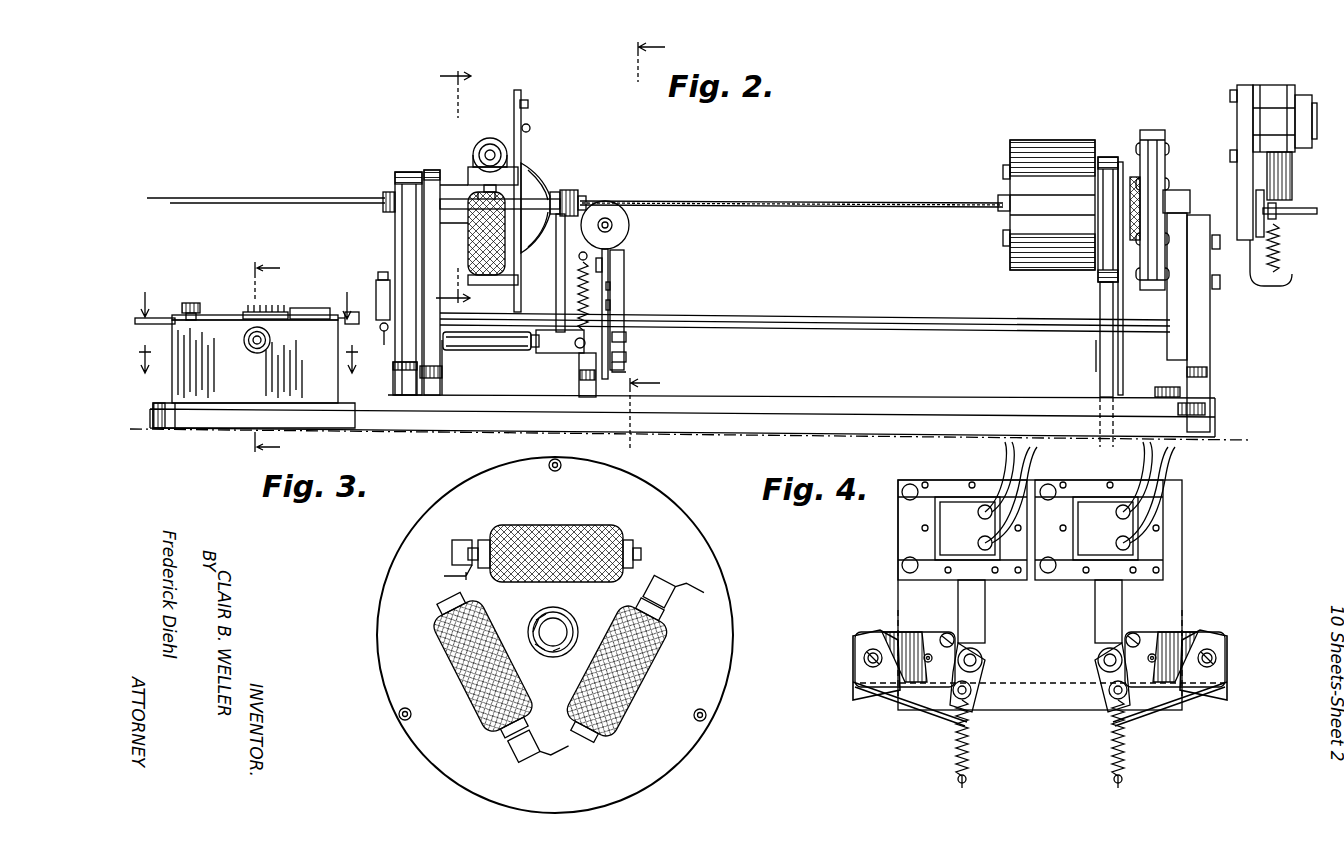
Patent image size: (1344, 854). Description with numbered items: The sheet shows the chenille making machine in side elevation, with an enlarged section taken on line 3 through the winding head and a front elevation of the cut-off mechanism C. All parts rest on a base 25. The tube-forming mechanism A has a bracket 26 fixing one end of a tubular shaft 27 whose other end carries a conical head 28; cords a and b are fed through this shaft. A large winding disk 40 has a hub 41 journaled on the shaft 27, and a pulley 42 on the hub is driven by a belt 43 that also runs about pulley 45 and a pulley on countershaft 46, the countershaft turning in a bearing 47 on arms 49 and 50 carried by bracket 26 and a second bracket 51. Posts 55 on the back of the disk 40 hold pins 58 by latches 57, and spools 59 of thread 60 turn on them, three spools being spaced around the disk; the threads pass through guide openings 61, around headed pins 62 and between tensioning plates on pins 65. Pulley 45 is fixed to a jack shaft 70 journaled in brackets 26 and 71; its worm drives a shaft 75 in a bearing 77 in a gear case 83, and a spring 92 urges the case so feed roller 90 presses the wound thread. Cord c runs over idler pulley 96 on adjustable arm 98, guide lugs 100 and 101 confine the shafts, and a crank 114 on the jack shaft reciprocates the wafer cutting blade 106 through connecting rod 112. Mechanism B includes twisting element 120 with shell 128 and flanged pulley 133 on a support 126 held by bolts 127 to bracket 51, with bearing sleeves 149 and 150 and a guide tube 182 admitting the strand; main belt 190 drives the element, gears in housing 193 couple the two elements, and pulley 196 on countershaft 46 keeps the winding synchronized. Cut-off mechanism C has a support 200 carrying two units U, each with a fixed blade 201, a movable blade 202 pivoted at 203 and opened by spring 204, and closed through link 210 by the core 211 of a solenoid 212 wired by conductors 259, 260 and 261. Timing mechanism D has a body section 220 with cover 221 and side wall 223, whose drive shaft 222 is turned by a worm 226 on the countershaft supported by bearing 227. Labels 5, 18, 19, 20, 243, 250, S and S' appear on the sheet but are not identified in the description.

In FIG. 2, the section line 3— 3 is at (452, 188).
In FIG. 2, the section line 5- 5 is at (655, 242).
In FIG. 2, the section line 18- 18 is at (247, 293).
In FIG. 2, the section line 19- 19 is at (249, 370).
In FIG. 2, the section line 20- 20 is at (280, 358).
In FIG. 2, the base 25 is at (706, 425).
In FIG. 2, the bracket 26 is at (407, 372).
In FIG. 2, the tubular shaft 27 is at (385, 197).
In FIG. 3, the tubular shaft 27 is at (575, 618).
In FIG. 2, the conical head 28 is at (535, 190).
In FIG. 2, the disk 40 is at (522, 92).
In FIG. 3, the disk 40 is at (377, 620).
In FIG. 2, the hub 41 is at (455, 192).
In FIG. 3, the hub 41 is at (541, 610).
In FIG. 2, the pulley 42 is at (432, 170).
In FIG. 2, the belt 43 is at (412, 172).
In FIG. 2, the pulley 45 is at (440, 380).
In FIG. 2, the countershaft 46 is at (870, 318).
In FIG. 2, the bearing 47 is at (378, 272).
In FIG. 2, the arm 49 is at (384, 345).
In FIG. 2, the arm 50 is at (1210, 368).
In FIG. 2, the bracket 51 is at (1210, 344).
In FIG. 3, the post 55 is at (452, 548).
In FIG. 3, the latch 57 is at (444, 576).
In FIG. 2, the pin 58 is at (492, 150).
In FIG. 3, the pin 58 is at (638, 548).
In FIG. 2, the spool 59 is at (476, 145).
In FIG. 3, the spool 59 is at (600, 525).
In FIG. 2, the thread 60 is at (530, 104).
In FIG. 3, the thread 60 is at (545, 525).
In FIG. 3, the guide opening 61 is at (398, 718).
In FIG. 2, the headed pin 62 is at (531, 127).
In FIG. 2, the pin 65 is at (555, 190).
In FIG. 2, the jack shaft 70 is at (522, 352).
In FIG. 2, the bracket 71 is at (587, 382).
In FIG. 2, the shaft 75 is at (575, 190).
In FIG. 2, the bearing 77 is at (554, 297).
In FIG. 2, the gear case 83 is at (555, 348).
In FIG. 2, the feed roller 90 is at (622, 205).
In FIG. 2, the spring 92 is at (624, 302).
In FIG. 2, the idler pulley 96 is at (630, 224).
In FIG. 2, the adjustable arm 98 is at (612, 262).
In FIG. 2, the guide lug 100 is at (612, 242).
In FIG. 2, the guide lug 101 is at (556, 262).
In FIG. 2, the cutting blade 106 is at (586, 200).
In FIG. 2, the connecting rod 112 is at (626, 340).
In FIG. 2, the crank 114 is at (626, 362).
In FIG. 2, the element 120 is at (1032, 280).
In FIG. 2, the support 126 is at (1180, 186).
In FIG. 2, the bolt 127 is at (1214, 286).
In FIG. 2, the cylindrical shell 128 is at (1105, 156).
In FIG. 2, the flanged pulley 133 is at (1121, 162).
In FIG. 2, the bearing sleeve 149 is at (1005, 166).
In FIG. 2, the bearing sleeve 150 is at (1005, 245).
In FIG. 2, the guide tube 182 is at (998, 200).
In FIG. 2, the main driving belt 190 is at (1100, 384).
In FIG. 2, the housing 193 is at (1152, 130).
In FIG. 2, the pulley 196 is at (1098, 350).
In FIG. 2, the support 200 is at (1243, 85).
In FIG. 4, the support 200 is at (1182, 496).
In FIG. 2, the fixed cutting blade 201 is at (1256, 200).
In FIG. 4, the fixed cutting blade 201 is at (915, 640).
In FIG. 2, the movable cutting blade 202 is at (1282, 255).
In FIG. 4, the movable cutting blade 202 is at (885, 700).
In FIG. 4, the pivot 203 is at (868, 660).
In FIG. 2, the spring 204 is at (1292, 274).
In FIG. 4, the spring 204 is at (955, 760).
In FIG. 2, the link 210 is at (1285, 225).
In FIG. 4, the link 210 is at (980, 700).
In FIG. 2, the core 211 is at (1268, 168).
In FIG. 4, the core 211 is at (970, 600).
In FIG. 2, the solenoid 212 is at (1258, 120).
In FIG. 4, the solenoid 212 is at (950, 532).
In FIG. 2, the body section 220 is at (196, 425).
In FIG. 2, the removable cover 221 is at (215, 316).
In FIG. 2, the drive shaft 222 is at (255, 355).
In FIG. 2, the side wall 223 is at (283, 349).
In FIG. 2, the worm 226 is at (258, 312).
In FIG. 2, the bearing 227 is at (320, 312).
In FIG. 2, the arm 243 is at (162, 318).
In FIG. 2, the knob 250 is at (200, 300).
In FIG. 4, the conductor 259 is at (1005, 470).
In FIG. 4, the conductor 260 is at (1125, 477).
In FIG. 4, the conductor 261 is at (1180, 458).
In FIG. 2, the mechanism A is at (433, 117).
In FIG. 2, the mechanism B is at (1031, 128).
In FIG. 2, the cut-off mechanism C is at (1276, 79).
In FIG. 4, the cut-off mechanism C is at (892, 480).
In FIG. 2, the timing mechanism D is at (216, 300).
In FIG. 2, the strand S is at (791, 190).
In FIG. 4, the strand S is at (909, 725).
In FIG. 4, the strand S' is at (1208, 694).
In FIG. 2, the unit U is at (1314, 100).
In FIG. 4, the unit U is at (950, 500).
In FIG. 2, the wire or cord a is at (286, 198).
In FIG. 2, the wire or cord b is at (283, 205).
In FIG. 2, the wire or cord c is at (640, 282).